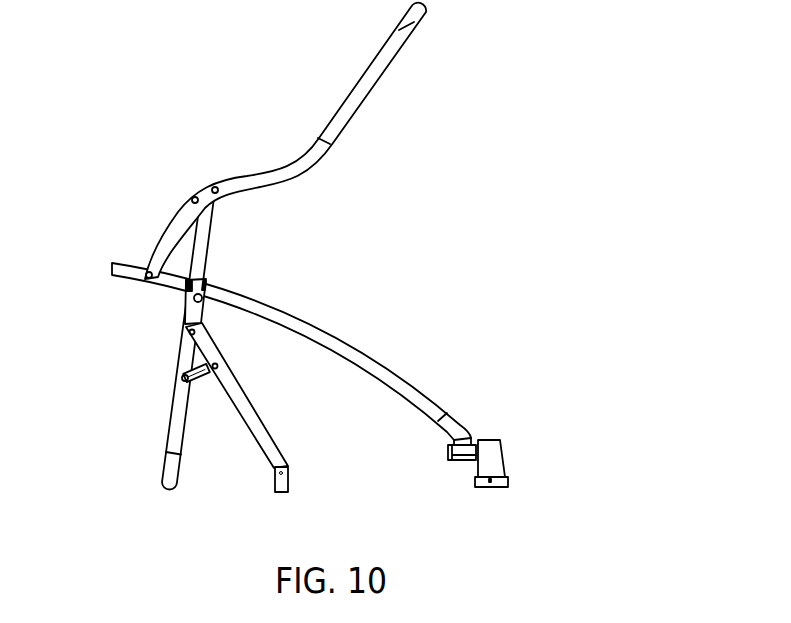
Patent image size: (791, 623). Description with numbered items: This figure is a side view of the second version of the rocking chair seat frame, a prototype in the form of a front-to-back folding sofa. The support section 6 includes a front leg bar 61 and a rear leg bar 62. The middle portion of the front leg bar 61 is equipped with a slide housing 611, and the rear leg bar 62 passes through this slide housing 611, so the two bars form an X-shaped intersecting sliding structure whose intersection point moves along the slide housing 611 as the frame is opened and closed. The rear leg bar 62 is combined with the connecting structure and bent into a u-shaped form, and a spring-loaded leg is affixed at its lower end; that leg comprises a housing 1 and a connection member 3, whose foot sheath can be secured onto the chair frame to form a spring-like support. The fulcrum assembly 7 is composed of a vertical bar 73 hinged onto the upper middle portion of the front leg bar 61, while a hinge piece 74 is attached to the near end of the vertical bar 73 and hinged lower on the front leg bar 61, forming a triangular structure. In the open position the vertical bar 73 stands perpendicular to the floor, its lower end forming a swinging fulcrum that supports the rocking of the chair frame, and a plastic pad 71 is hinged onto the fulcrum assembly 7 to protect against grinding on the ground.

The housing 1 is at (508, 450).
The connection member 3 is at (455, 462).
The support section 6 is at (127, 225).
The front leg bar 61 is at (170, 432).
The slide housing 611 is at (217, 280).
The rear leg bar 62 is at (342, 335).
The fulcrum assembly 7 is at (255, 423).
The plastic pad 71 is at (292, 483).
The vertical bar 73 is at (255, 468).
The hinge piece 74 is at (192, 365).